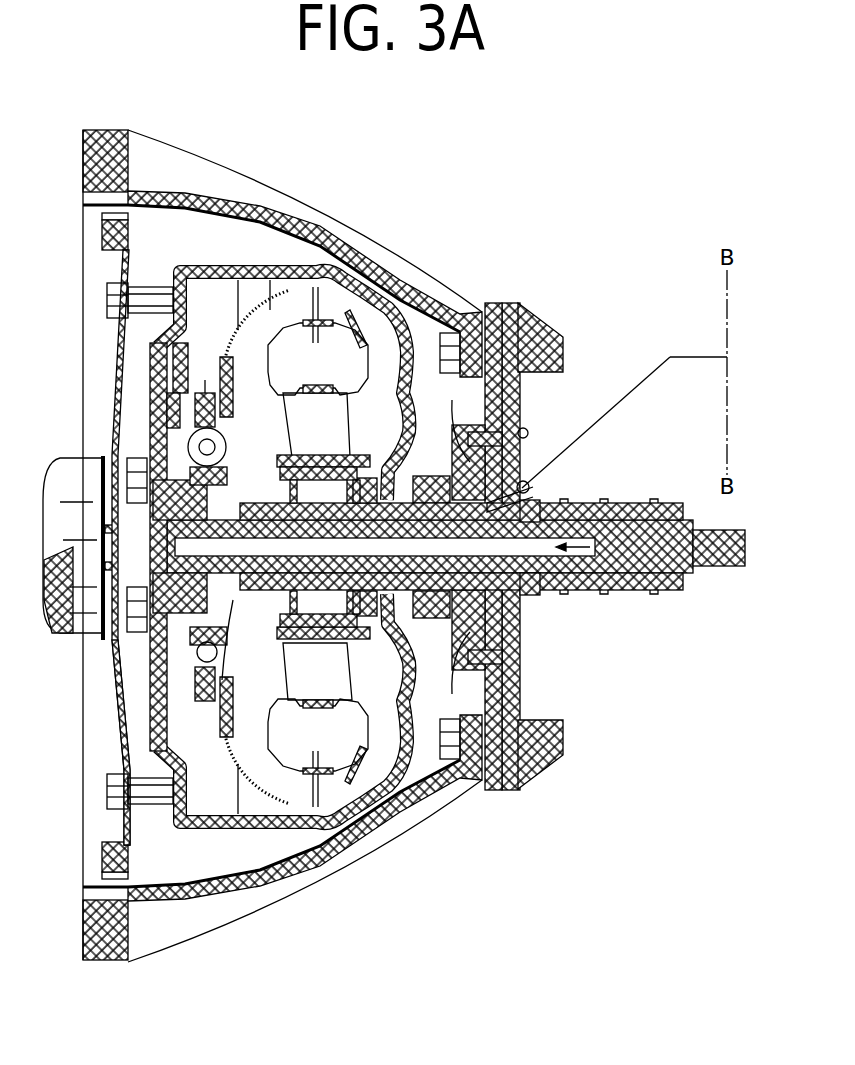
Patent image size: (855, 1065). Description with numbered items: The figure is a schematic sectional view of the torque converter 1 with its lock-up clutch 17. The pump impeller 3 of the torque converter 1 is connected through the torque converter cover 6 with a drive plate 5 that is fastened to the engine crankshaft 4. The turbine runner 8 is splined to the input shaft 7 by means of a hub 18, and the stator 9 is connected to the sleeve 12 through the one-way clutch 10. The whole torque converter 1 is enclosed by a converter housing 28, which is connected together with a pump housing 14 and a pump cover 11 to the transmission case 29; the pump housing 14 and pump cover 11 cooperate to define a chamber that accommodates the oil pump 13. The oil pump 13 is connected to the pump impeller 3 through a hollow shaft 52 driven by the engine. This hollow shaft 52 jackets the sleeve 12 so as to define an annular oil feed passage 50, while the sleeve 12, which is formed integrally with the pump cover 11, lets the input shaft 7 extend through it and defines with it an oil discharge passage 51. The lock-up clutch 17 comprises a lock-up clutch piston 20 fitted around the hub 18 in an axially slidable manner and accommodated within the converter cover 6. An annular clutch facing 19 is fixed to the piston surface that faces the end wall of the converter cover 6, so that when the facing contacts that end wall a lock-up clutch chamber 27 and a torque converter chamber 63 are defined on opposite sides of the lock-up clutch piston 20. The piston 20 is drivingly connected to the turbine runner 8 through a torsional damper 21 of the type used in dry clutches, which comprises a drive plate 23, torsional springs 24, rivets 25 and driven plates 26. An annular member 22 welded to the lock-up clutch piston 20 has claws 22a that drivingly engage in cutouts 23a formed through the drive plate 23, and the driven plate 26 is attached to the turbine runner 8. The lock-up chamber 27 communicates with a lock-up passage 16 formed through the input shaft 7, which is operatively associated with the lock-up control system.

The torque converter 1 is at (312, 260).
The pump impeller 3 is at (366, 292).
The engine crankshaft 4 is at (70, 460).
The drive plate 5 is at (122, 363).
The torque converter cover 6 is at (150, 700).
The input shaft 7 is at (710, 552).
The turbine runner 8 is at (278, 303).
The stator 9 is at (340, 412).
The one-way clutch 10 is at (323, 493).
The pump cover 11 is at (521, 405).
The sleeve 12 is at (410, 588).
The oil pump 13 is at (528, 482).
The pump housing 14 is at (488, 680).
The lock-up passage 16 is at (590, 556).
The lock-up clutch 17 is at (150, 340).
The hub 18 is at (219, 458).
The clutch facing 19 is at (108, 300).
The lock-up clutch piston 20 is at (165, 392).
The torsional damper 21 is at (152, 458).
The annular member 22 is at (190, 368).
The claws 22a is at (225, 400).
The drive plate 23 is at (195, 420).
The cutouts 23a is at (212, 672).
The torsional springs 24 is at (283, 436).
The rivets 25 is at (188, 646).
The driven plates 26 is at (285, 655).
The lock-up clutch chamber 27 is at (185, 672).
The converter housing 28 is at (410, 833).
The transmission case 29 is at (548, 766).
The annular oil feed passage 50 is at (402, 500).
The oil discharge passage 51 is at (538, 600).
The hollow shaft 52 is at (436, 476).
The torque converter chamber 63 is at (238, 283).